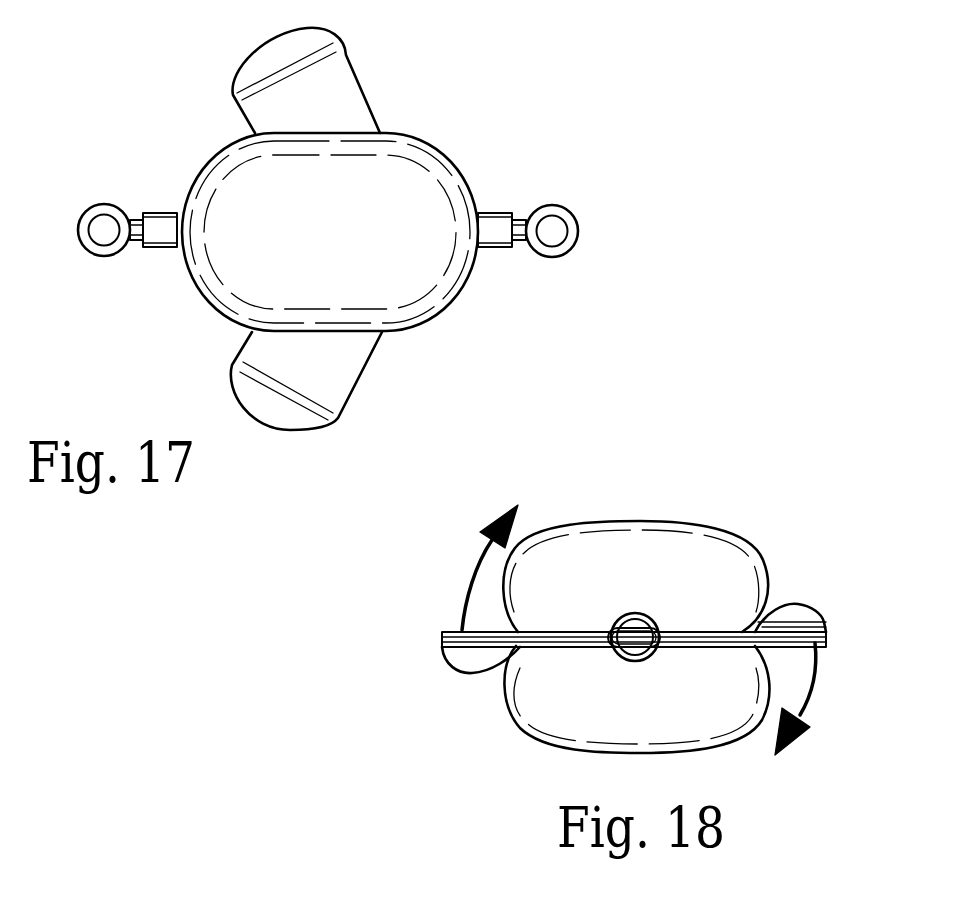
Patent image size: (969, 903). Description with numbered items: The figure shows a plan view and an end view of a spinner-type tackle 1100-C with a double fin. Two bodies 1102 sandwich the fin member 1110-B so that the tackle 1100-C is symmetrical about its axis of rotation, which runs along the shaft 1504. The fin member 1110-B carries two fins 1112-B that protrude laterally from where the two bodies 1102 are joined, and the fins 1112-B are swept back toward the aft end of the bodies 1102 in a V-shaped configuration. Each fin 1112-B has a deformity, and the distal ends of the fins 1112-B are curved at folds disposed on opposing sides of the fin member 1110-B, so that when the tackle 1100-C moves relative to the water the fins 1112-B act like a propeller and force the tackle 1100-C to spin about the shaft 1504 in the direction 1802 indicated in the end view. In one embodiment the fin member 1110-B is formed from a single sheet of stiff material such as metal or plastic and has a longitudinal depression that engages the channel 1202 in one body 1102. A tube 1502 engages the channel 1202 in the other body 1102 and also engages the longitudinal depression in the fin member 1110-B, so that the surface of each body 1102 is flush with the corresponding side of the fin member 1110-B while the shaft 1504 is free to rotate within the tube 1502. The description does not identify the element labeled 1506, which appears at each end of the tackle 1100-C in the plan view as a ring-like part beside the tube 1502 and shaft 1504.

In FIG. 17, the tackle 1100-C is at (549, 85).
In FIG. 18, the tackle 1100-C is at (738, 412).
In FIG. 17, the body 1102 is at (477, 267).
In FIG. 18, the body 1102 is at (633, 520).
In FIG. 18, the fin member 1110-B is at (713, 600).
In FIG. 17, the fin 1112-B is at (360, 87).
In FIG. 18, the fin 1112-B is at (442, 637).
In FIG. 17, the tube 1502 is at (160, 252).
In FIG. 18, the tube 1502 is at (632, 613).
In FIG. 17, the shaft 1504 is at (136, 218).
In FIG. 17, the ring / eyelet 1506 is at (107, 204).
In FIG. 18, the channel 1202 is at (633, 661).
In FIG. 18, the direction 1802 is at (469, 582).